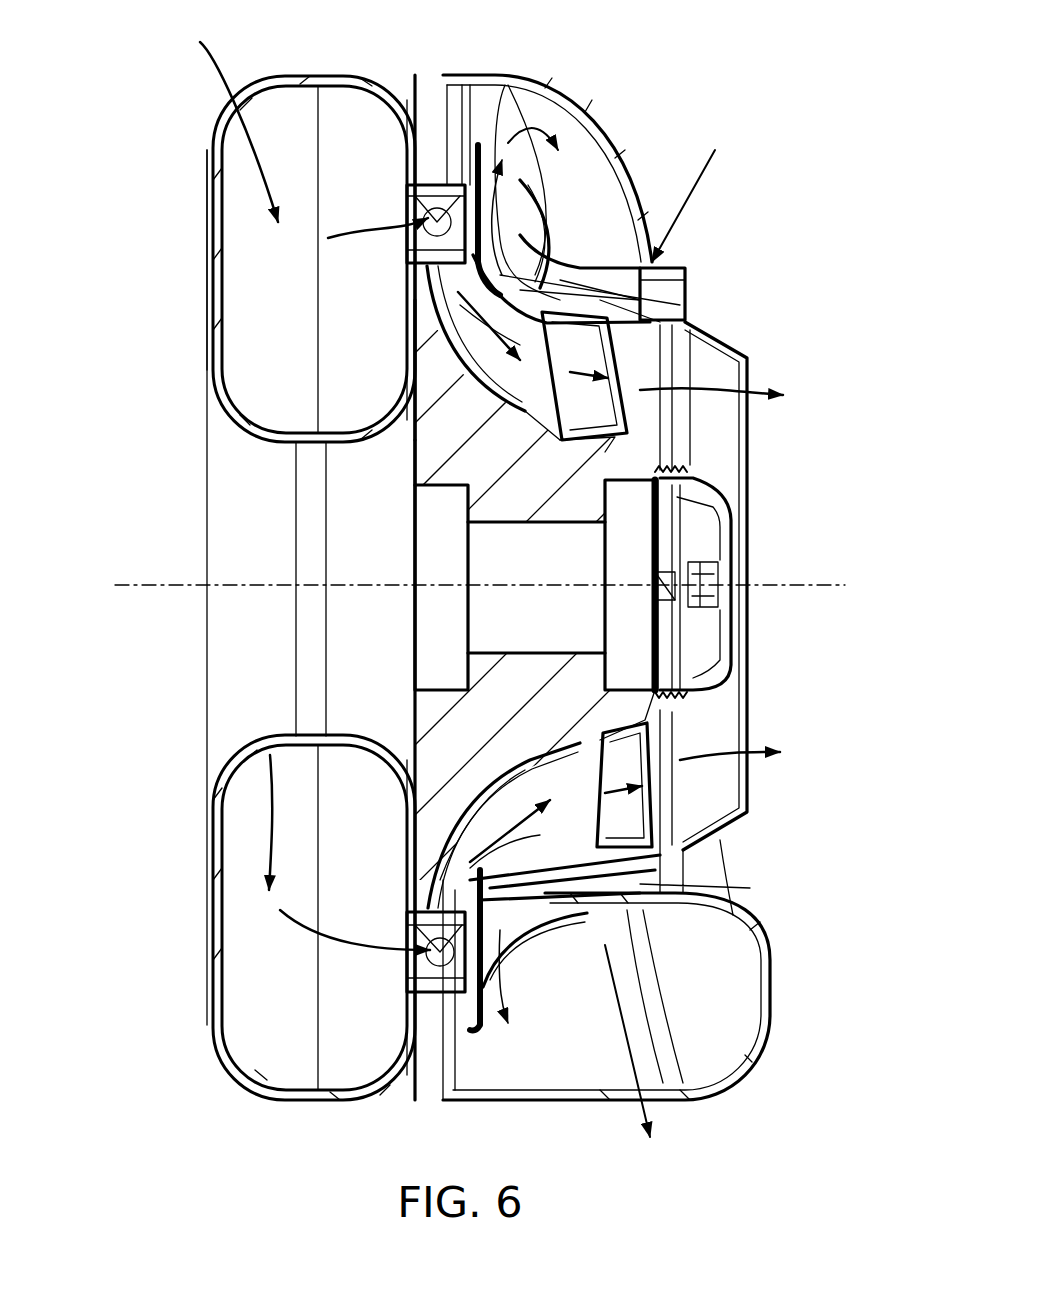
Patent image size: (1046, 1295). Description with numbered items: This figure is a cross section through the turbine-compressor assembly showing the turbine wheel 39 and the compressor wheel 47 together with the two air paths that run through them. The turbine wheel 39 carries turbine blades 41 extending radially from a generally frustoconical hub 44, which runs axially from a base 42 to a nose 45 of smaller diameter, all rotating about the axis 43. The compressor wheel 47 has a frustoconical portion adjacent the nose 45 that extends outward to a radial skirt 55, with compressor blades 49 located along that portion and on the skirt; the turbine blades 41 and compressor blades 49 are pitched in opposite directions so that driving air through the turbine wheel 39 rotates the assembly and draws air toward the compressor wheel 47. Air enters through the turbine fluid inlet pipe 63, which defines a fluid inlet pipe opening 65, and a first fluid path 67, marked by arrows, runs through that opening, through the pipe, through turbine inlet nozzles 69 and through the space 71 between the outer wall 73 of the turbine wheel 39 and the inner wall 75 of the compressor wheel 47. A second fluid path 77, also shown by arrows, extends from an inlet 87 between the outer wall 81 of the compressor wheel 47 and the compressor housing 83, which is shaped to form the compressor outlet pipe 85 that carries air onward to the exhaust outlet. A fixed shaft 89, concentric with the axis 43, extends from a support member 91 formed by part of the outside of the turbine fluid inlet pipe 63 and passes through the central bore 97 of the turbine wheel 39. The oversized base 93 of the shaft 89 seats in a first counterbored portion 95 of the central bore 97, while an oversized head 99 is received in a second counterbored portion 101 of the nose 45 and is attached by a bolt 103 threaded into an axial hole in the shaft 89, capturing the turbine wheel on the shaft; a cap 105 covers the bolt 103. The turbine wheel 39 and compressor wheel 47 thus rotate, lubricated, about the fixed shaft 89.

The turbine wheel 39 is at (528, 450).
The turbine blades 41 is at (635, 396).
The base 42 is at (430, 722).
The axis 43 is at (182, 582).
The hub 44 is at (430, 458).
The nose 45 is at (692, 466).
The compressor wheel 47 is at (575, 567).
The compressor blades 49 is at (556, 275).
The radial skirt 55 is at (500, 92).
The turbine fluid inlet pipe 63 is at (212, 250).
The fluid inlet pipe opening 65 is at (250, 318).
The first fluid path 67 is at (265, 162).
The turbine inlet nozzles 69 is at (440, 210).
The space 71 is at (503, 587).
The outer wall 73 is at (480, 396).
The inner wall 75 is at (483, 283).
The second fluid path 77 is at (543, 125).
The outer wall 81 is at (572, 293).
The compressor housing 83 is at (697, 195).
The compressor outlet pipe 85 is at (745, 1068).
The inlet 87 is at (690, 283).
The shaft 89 is at (536, 587).
The support member 91 is at (412, 440).
The base 93 is at (436, 640).
The first counterbored portion 95 is at (430, 490).
The central bore 97 is at (565, 527).
The head 99 is at (631, 585).
The second counterbored portion 101 is at (625, 500).
The bolt 103 is at (660, 590).
The cap 105 is at (705, 538).